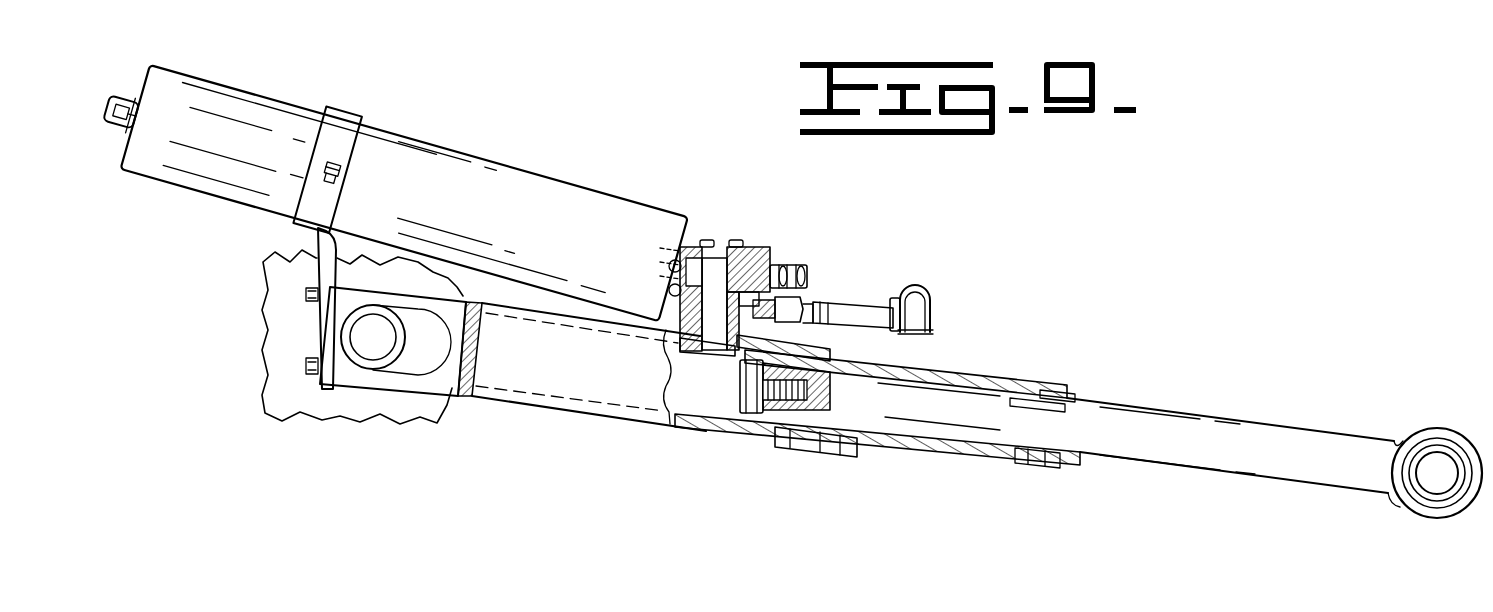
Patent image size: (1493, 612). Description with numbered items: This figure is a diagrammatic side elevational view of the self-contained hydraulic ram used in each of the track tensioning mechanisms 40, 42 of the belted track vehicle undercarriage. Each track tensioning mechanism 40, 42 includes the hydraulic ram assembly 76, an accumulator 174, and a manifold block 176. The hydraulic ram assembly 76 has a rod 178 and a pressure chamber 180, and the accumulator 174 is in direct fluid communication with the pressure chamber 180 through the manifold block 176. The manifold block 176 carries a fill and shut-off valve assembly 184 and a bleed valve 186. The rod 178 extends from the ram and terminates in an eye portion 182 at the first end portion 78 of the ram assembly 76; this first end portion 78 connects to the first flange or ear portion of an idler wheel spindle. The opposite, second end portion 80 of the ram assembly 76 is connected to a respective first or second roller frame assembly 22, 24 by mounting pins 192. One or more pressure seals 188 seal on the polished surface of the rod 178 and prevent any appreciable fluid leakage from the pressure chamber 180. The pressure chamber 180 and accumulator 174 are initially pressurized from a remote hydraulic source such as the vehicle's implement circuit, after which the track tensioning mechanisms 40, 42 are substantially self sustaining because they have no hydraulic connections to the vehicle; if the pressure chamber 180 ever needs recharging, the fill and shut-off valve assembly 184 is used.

The accumulator 174 is at (512, 182).
The manifold block 176 is at (760, 253).
The bleed valve 186 is at (793, 267).
The fill and shut-off valve assembly 184 is at (890, 300).
The mounting pin 192 is at (385, 340).
The first roller frame assembly 22 is at (326, 362).
The second roller frame assembly 24 is at (300, 400).
The second end portion 80 is at (378, 396).
The first track tensioning mechanism 40 is at (563, 404).
The second track tensioning mechanism 42 is at (568, 432).
The pressure chamber 180 is at (707, 422).
The hydraulic ram assembly 76 is at (1012, 372).
The rod 178 is at (1130, 415).
The eye portion 182 is at (1438, 428).
The first end portion 78 is at (1350, 506).
The pressure seals 188 is at (1028, 462).